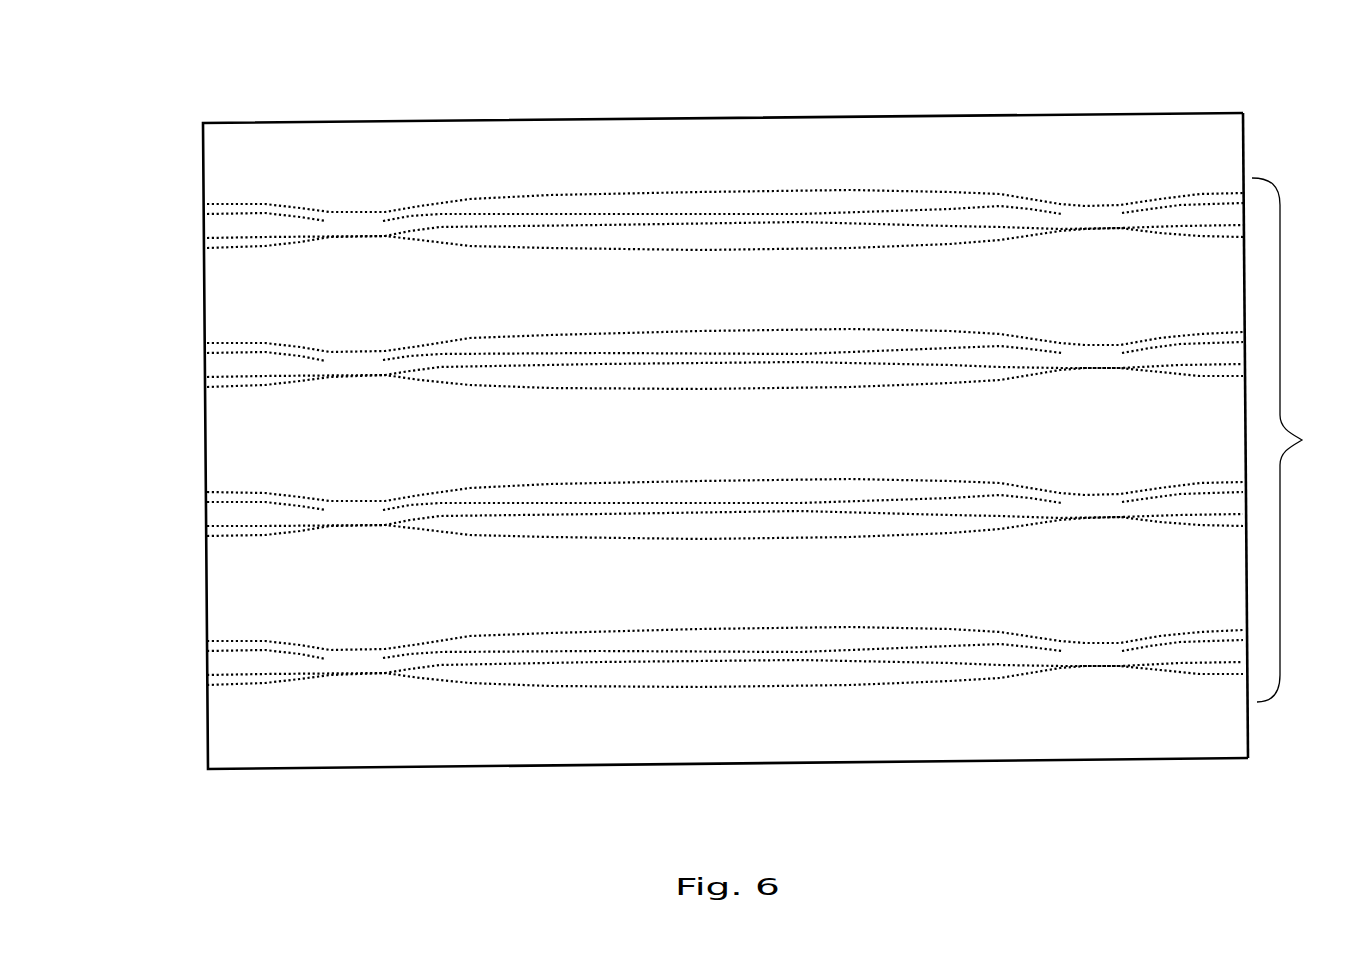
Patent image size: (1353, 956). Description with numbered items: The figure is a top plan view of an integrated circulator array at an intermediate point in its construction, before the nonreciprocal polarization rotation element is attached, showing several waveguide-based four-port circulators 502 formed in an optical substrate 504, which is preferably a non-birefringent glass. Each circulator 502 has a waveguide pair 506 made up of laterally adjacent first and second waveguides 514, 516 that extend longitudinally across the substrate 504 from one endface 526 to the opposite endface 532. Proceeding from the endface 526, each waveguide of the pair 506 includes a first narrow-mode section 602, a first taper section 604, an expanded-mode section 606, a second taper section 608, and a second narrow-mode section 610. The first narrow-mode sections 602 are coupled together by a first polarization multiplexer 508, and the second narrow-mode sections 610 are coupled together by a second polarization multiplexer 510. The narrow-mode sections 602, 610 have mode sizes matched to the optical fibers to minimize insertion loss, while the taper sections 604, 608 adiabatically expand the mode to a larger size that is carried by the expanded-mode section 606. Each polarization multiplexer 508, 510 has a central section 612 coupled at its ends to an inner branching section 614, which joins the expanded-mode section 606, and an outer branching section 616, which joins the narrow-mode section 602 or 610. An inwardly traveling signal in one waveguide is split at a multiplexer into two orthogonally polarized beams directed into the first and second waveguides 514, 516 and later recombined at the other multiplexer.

The circulator 502 is at (726, 450).
The optical substrate 504 is at (925, 730).
The waveguide pair 506 is at (455, 633).
The first polarization multiplexer 508 is at (355, 218).
The second polarization multiplexer 510 is at (1093, 212).
The first waveguide 514 is at (250, 380).
The second waveguide 516 is at (258, 340).
The endface 526 is at (205, 487).
The opposite endface 532 is at (1245, 153).
The first narrow-mode section 602 is at (245, 207).
The first taper section 604 is at (555, 205).
The expanded-mode section 606 is at (687, 200).
The second taper section 608 is at (850, 197).
The second narrow-mode section 610 is at (1215, 195).
The central section 612 is at (357, 683).
The inner branching section 614 is at (427, 683).
The outer branching section 616 is at (298, 683).